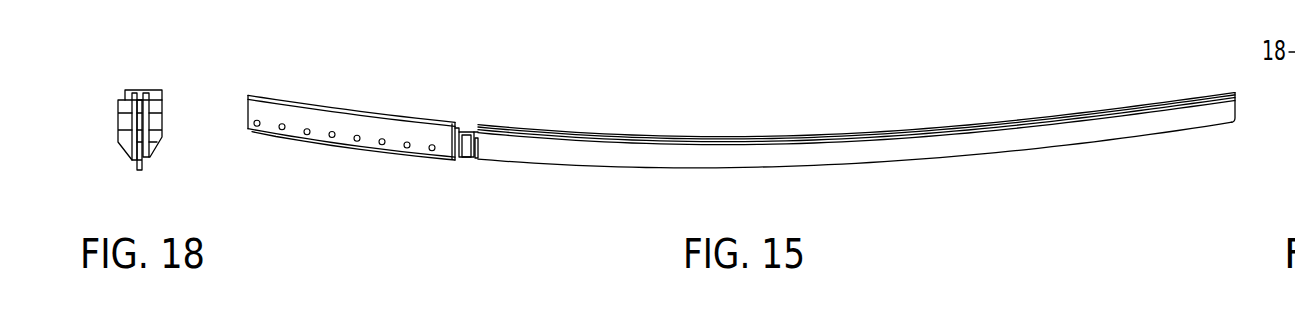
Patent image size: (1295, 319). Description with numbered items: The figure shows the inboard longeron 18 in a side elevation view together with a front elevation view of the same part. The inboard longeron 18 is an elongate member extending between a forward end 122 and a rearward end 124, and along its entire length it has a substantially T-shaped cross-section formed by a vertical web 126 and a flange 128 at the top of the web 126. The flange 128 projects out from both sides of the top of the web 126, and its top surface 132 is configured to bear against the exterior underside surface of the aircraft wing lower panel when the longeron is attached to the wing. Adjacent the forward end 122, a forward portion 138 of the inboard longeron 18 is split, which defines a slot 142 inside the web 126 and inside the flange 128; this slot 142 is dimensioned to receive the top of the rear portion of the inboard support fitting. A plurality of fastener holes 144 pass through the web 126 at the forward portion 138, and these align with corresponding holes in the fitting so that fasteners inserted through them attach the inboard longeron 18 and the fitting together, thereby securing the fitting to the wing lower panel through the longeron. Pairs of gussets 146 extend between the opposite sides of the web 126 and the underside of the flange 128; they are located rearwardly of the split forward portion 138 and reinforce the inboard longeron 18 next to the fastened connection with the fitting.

In FIG. 18, the inboard longeron 18 is at (139, 91).
In FIG. 15, the inboard longeron 18 is at (739, 149).
In FIG. 18, the forward end 122 is at (137, 117).
In FIG. 15, the forward end 122 is at (345, 149).
In FIG. 15, the rearward end 124 is at (1237, 108).
In FIG. 18, the vertical web 126 is at (130, 142).
In FIG. 15, the vertical web 126 is at (835, 160).
In FIG. 15, the flange 128 is at (640, 136).
In FIG. 18, the top surface 132 is at (131, 90).
In FIG. 15, the top surface 132 is at (856, 112).
In FIG. 15, the forward portion 138 is at (377, 149).
In FIG. 18, the slot 142 is at (140, 84).
In FIG. 15, the fastener holes 144 is at (432, 128).
In FIG. 15, the gussets 146 is at (475, 178).